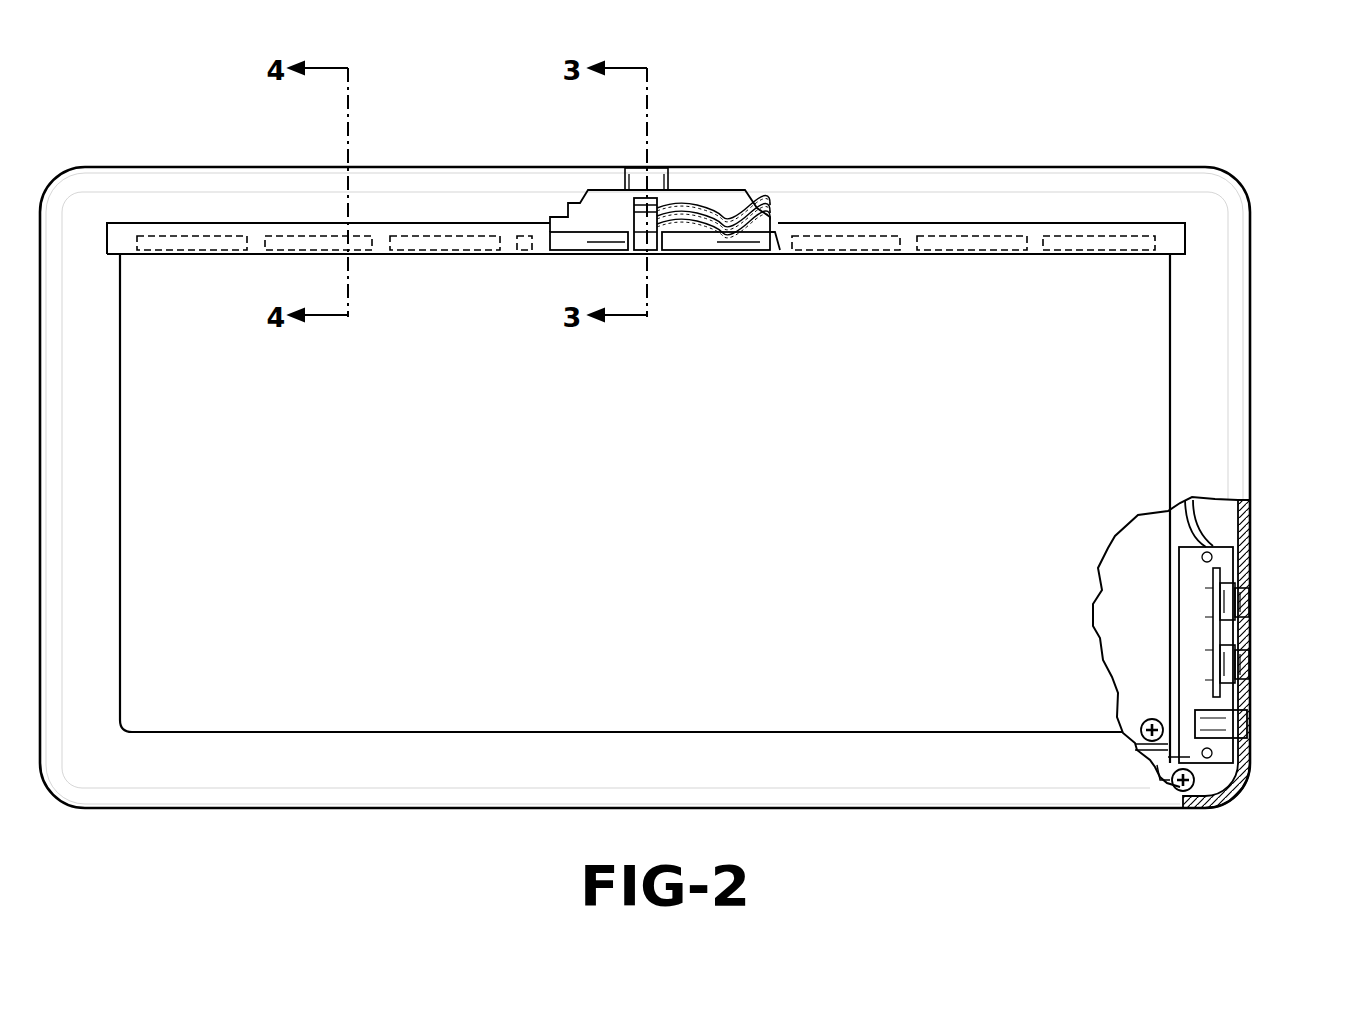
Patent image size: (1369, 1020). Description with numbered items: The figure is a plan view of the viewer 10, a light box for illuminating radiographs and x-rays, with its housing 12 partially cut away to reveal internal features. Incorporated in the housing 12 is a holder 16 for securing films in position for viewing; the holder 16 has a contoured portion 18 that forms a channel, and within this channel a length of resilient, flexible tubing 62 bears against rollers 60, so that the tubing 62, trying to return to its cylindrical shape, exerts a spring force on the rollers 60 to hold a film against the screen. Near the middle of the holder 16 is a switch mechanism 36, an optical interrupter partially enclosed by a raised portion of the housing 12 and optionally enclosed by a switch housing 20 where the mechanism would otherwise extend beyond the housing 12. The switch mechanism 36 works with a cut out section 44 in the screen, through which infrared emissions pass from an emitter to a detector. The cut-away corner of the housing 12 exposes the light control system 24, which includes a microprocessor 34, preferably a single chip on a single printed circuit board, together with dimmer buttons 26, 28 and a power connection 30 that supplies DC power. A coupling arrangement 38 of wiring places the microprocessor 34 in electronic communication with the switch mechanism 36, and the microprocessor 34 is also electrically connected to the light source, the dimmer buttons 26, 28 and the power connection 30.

The viewer 10 is at (1312, 158).
The housing 12 is at (1236, 322).
The holder 16 is at (1116, 228).
The contoured portion 18 is at (887, 229).
The switch housing 20 is at (655, 182).
The light control system 24 is at (1266, 752).
The dimmer button 26 is at (1250, 600).
The dimmer button 28 is at (1250, 662).
The power connection 30 is at (1241, 727).
The microprocessor 34 is at (1190, 598).
The switch mechanism 36 is at (640, 218).
The coupling arrangement 38 is at (722, 208).
The cut out section 44 is at (664, 262).
The rollers 60 is at (293, 236).
The tubing 62 is at (740, 237).